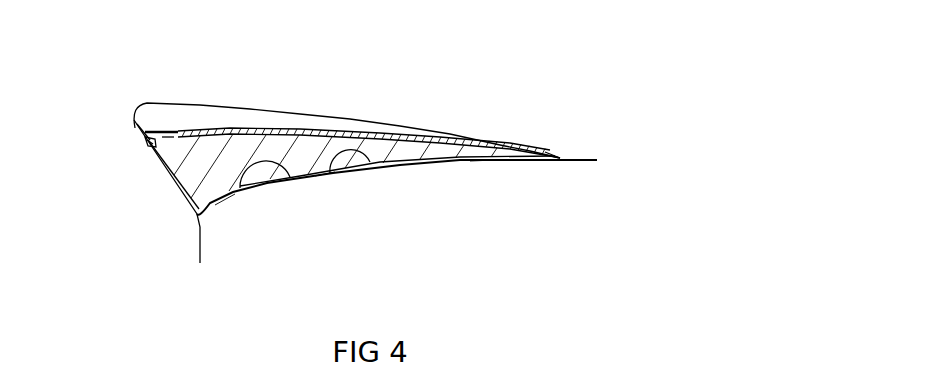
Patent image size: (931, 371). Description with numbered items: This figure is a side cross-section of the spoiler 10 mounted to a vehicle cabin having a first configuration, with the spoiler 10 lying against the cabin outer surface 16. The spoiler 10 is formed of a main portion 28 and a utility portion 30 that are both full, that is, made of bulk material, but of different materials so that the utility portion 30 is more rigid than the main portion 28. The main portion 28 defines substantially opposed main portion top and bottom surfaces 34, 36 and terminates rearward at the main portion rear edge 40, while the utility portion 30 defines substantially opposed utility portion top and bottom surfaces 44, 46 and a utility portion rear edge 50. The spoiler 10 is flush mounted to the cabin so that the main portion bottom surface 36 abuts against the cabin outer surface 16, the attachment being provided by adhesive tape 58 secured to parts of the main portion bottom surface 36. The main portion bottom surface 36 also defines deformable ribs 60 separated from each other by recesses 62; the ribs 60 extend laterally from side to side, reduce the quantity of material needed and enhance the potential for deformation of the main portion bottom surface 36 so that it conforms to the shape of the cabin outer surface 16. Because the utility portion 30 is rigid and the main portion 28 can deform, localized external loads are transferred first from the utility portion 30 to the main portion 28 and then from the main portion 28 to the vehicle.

The spoiler 10 is at (488, 48).
The cabin outer surface 16 is at (585, 160).
The main portion 28 is at (568, 153).
The utility portion 30 is at (327, 112).
The main portion top surface 34 is at (405, 140).
The main portion bottom surface 36 is at (372, 162).
The main portion rear edge 40 is at (152, 150).
The utility portion top surface 44 is at (161, 118).
The utility portion bottom surface 46 is at (168, 137).
The utility portion rear edge 50 is at (147, 143).
The adhesive tape 58 is at (503, 203).
The deformable ribs 60 is at (302, 165).
The recesses 62 is at (258, 160).